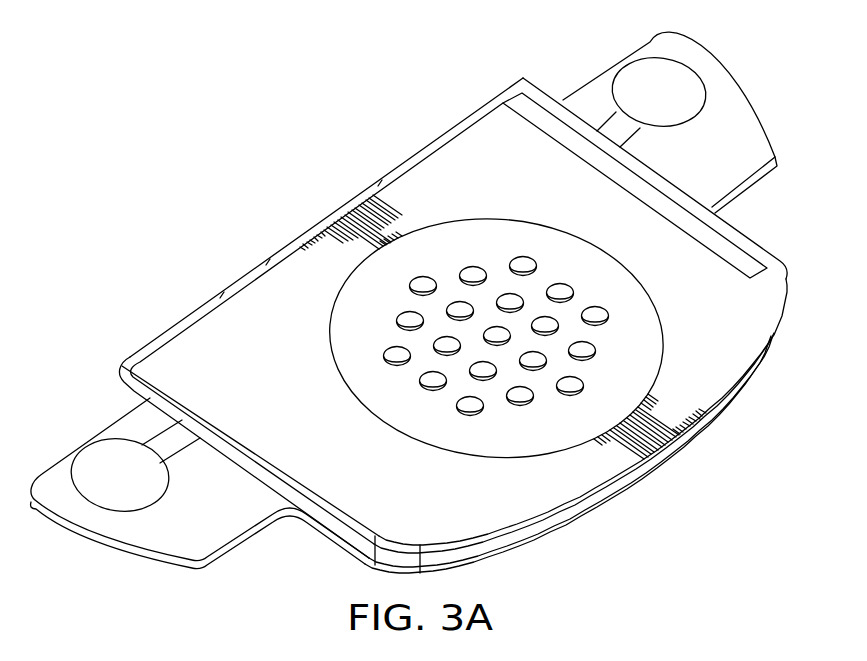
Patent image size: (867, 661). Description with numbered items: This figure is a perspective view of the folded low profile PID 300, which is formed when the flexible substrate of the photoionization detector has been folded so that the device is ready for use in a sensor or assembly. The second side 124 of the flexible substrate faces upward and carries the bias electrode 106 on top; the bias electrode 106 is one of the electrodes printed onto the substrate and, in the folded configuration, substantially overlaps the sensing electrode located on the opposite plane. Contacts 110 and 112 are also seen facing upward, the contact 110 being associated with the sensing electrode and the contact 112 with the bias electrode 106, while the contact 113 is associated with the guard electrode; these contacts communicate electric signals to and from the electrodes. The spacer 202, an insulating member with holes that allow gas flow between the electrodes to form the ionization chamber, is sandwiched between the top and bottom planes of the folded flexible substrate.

The folded low profile PID 300 is at (260, 115).
The second side 124 is at (413, 180).
The contact 113 is at (670, 210).
The contact 110 is at (636, 80).
The contact 112 is at (100, 460).
The bias electrode 106 is at (496, 230).
The spacer 202 is at (609, 511).